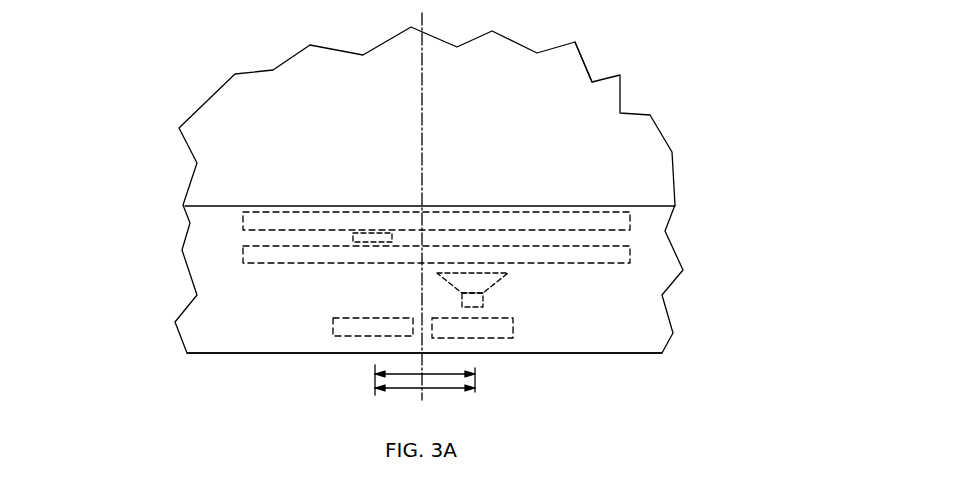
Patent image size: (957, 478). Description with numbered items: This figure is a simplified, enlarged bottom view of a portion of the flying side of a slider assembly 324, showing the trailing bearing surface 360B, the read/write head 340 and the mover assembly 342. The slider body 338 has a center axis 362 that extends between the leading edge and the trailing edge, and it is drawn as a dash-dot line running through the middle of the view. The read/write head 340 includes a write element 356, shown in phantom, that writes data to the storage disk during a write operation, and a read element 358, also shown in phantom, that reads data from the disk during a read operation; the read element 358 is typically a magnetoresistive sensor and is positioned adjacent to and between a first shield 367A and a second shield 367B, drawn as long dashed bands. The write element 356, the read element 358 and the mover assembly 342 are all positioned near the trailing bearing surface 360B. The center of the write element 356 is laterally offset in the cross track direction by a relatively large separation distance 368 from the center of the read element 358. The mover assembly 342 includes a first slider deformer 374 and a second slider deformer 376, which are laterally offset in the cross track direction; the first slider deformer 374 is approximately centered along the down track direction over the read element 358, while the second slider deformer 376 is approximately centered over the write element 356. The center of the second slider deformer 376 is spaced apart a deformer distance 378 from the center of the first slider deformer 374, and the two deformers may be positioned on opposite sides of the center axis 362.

The slider assembly 324 is at (672, 99).
The slider body 338 is at (565, 78).
The read/write head 340 is at (768, 202).
The mover assembly 342 is at (72, 287).
The write element 356 is at (480, 288).
The read element 358 is at (382, 237).
The trailing bearing surface 360B is at (663, 335).
The center axis 362 is at (422, 29).
The first shield 367A is at (243, 222).
The second shield 367B is at (243, 251).
The separation distance 368 is at (402, 390).
The first slider deformer 374 is at (343, 332).
The second slider deformer 376 is at (442, 322).
The deformer distance 378 is at (445, 371).